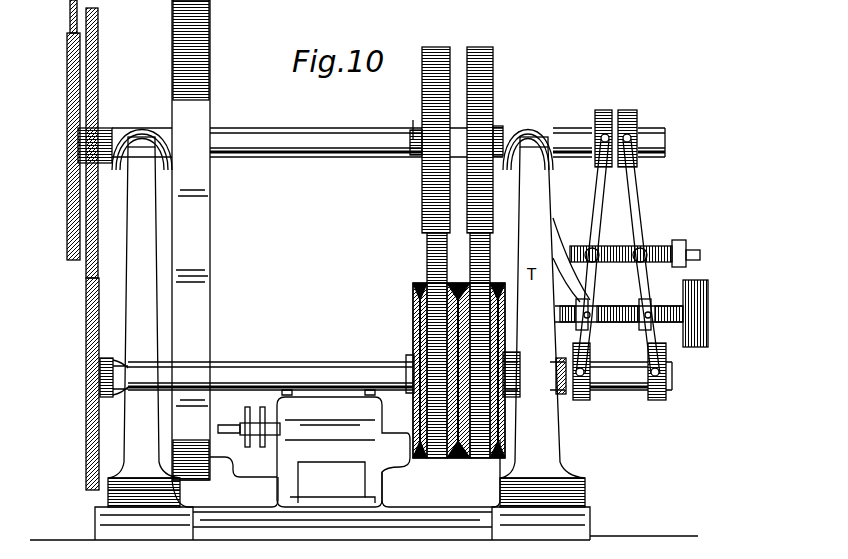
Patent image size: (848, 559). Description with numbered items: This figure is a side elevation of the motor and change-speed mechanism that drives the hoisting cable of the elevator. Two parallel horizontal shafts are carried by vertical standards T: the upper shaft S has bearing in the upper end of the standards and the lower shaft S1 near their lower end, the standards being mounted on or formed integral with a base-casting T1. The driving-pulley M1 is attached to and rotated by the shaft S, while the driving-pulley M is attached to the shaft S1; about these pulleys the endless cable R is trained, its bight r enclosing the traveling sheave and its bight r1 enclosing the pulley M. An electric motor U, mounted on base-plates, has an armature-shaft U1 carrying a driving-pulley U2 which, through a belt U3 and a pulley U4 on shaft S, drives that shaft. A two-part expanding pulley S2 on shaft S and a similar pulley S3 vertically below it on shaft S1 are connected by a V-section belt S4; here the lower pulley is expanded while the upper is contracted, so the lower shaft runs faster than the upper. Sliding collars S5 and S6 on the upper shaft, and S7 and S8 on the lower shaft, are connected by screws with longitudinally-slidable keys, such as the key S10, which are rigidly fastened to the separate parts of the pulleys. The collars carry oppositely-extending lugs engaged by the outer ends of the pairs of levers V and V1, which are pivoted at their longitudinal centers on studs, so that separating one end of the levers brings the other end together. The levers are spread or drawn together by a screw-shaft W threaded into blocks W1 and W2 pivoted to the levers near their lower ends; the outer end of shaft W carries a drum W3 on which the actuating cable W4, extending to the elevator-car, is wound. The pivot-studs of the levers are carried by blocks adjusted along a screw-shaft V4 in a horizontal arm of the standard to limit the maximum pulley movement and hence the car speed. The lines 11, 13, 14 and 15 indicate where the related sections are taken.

The endless cable R is at (98, 70).
The driving-pulley M1 is at (68, 236).
The driving-pulley M is at (88, 380).
The vertical standard T is at (144, 335).
The base-casting T1 is at (342, 518).
The electric motor U is at (343, 448).
The armature-shaft U1 is at (280, 434).
The driving-pulley U2 is at (215, 490).
The belt U3 is at (205, 313).
The pulley U4 is at (192, 170).
The upper shaft S is at (332, 160).
The lower shaft S1 is at (317, 362).
The expanding and contracting pulley S2 is at (422, 88).
The expanding and contracting pulley S3 is at (413, 291).
The belt S4 is at (424, 248).
The collar S5 is at (598, 112).
The collar S6 is at (630, 112).
The collar S7 is at (580, 400).
The collar S8 is at (500, 126).
The longitudinally-slidable key S10 is at (523, 368).
The lever V is at (634, 200).
The lever V1 is at (596, 204).
The screw-shaft V4 is at (645, 230).
The bight r is at (645, 252).
The bight r1 is at (598, 250).
The screw-shaft W is at (619, 326).
The block W1 is at (575, 312).
The block W2 is at (651, 306).
The drum W3 is at (708, 335).
The actuating cable W4 is at (702, 282).
The section line 11 11 is at (410, 141).
The section line 13 13 is at (543, 374).
The section line 14 14 is at (720, 256).
The section line 15 15 is at (700, 315).